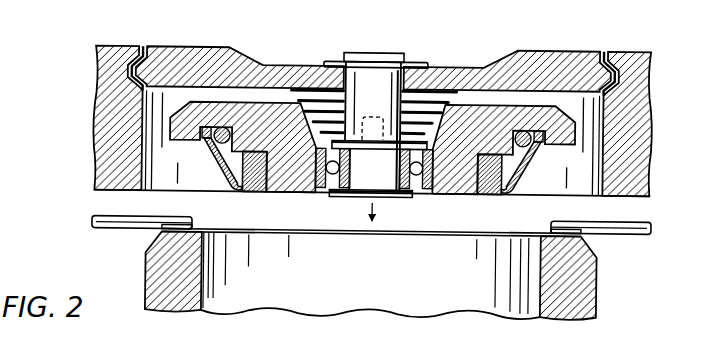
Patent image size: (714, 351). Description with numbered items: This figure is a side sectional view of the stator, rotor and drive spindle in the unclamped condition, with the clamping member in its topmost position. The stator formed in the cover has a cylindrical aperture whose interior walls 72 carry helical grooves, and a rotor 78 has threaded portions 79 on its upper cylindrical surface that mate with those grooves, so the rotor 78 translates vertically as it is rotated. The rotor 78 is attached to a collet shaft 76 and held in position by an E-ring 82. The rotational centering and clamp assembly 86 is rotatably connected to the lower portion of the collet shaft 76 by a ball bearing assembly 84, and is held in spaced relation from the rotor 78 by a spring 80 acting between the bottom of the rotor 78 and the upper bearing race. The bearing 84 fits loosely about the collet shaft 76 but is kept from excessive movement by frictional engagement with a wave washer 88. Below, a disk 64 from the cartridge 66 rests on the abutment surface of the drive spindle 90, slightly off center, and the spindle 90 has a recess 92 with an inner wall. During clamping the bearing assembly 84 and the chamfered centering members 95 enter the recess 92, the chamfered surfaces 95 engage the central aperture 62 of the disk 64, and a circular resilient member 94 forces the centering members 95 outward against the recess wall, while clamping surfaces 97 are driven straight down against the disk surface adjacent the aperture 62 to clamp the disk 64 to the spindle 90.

The central aperture 62 is at (112, 207).
The disk 64 is at (183, 226).
The cartridge 66 is at (115, 233).
The interior walls 72 is at (617, 198).
The collet shaft 76 is at (383, 52).
The rotor 78 is at (243, 47).
The threaded portions 79 is at (148, 56).
The spring 80 is at (493, 66).
The E-ring 82 is at (335, 58).
The ball bearing assembly 84 is at (422, 199).
The rotational centering and clamp assembly 86 is at (262, 199).
The wave washer 88 is at (357, 196).
The drive spindle 90 is at (186, 319).
The recess 92 is at (469, 228).
The circular resilient member 94 is at (545, 62).
The chamfered centering members 95 is at (197, 193).
The clamping surfaces 97 is at (162, 193).